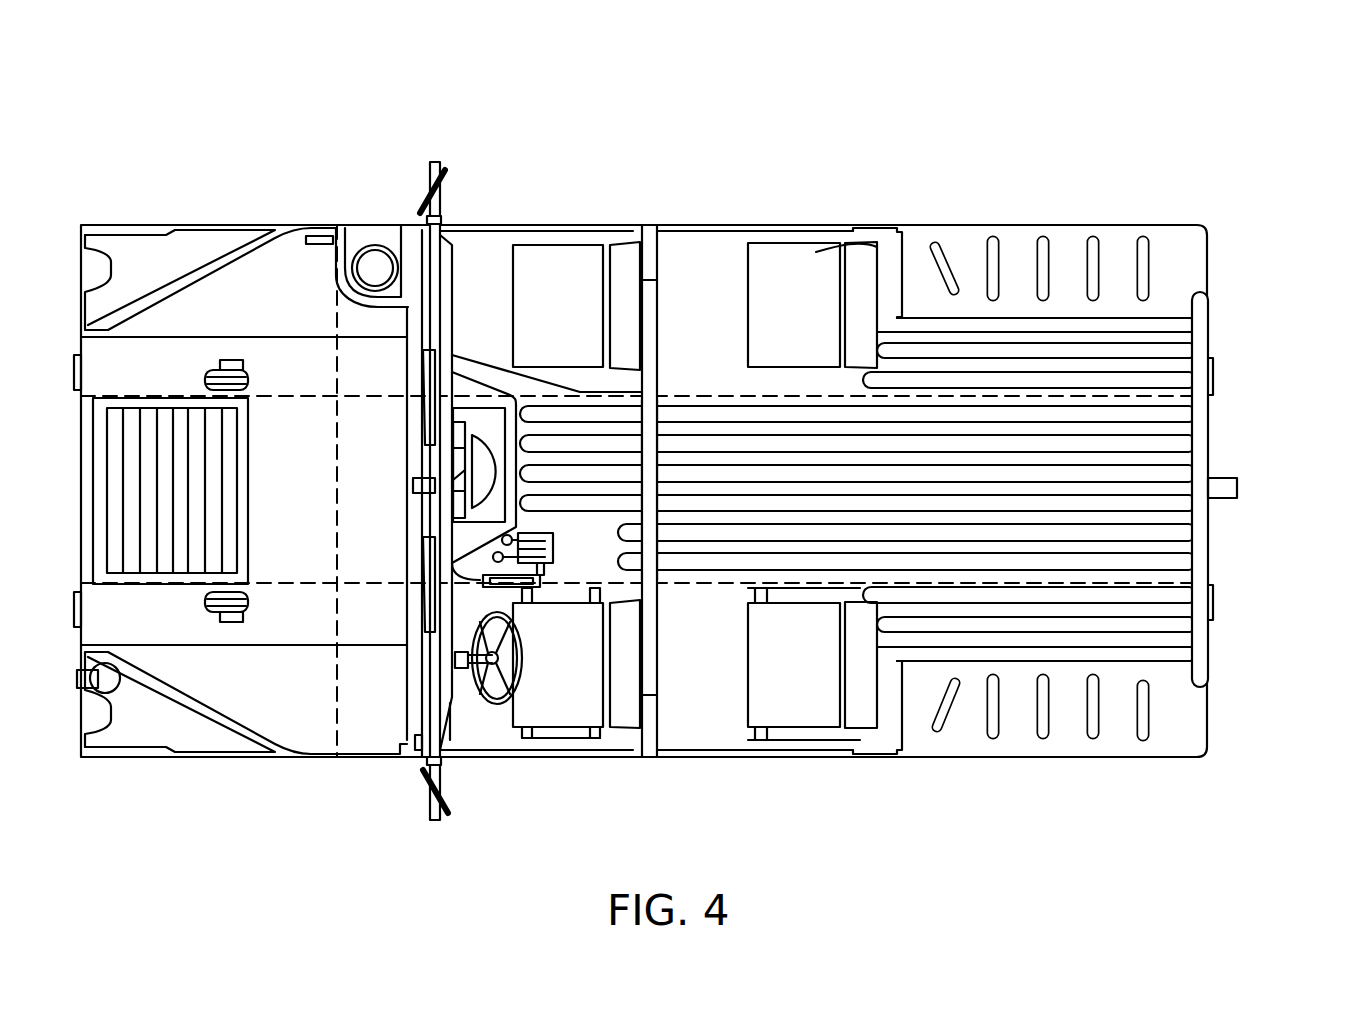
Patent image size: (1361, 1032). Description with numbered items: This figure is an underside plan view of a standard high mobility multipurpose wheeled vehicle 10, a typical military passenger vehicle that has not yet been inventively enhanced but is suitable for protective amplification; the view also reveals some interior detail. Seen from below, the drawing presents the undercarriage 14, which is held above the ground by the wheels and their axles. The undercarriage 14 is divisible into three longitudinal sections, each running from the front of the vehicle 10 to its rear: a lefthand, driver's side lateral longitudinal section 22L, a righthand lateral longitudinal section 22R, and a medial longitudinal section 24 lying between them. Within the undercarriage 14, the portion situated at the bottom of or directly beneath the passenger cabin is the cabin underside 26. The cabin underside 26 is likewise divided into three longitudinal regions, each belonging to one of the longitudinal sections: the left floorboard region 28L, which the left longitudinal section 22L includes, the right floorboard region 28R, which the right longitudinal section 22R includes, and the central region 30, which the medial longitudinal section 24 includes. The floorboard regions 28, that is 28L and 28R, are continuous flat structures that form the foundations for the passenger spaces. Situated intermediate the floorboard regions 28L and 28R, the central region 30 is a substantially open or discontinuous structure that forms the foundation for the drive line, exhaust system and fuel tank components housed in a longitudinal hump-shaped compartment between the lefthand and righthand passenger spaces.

The high mobility multipurpose wheeled vehicle 10 is at (1163, 80).
The undercarriage 14 is at (648, 399).
The righthand lateral longitudinal section 22R is at (1217, 224).
The lefthand lateral longitudinal section 22L is at (1217, 585).
The medial longitudinal section 24 is at (1217, 398).
The cabin underside 26 is at (944, 222).
The floorboard regions 28 is at (772, 485).
The right floorboard region 28R is at (713, 255).
The left floorboard region 28L is at (705, 715).
The central region 30 is at (705, 545).